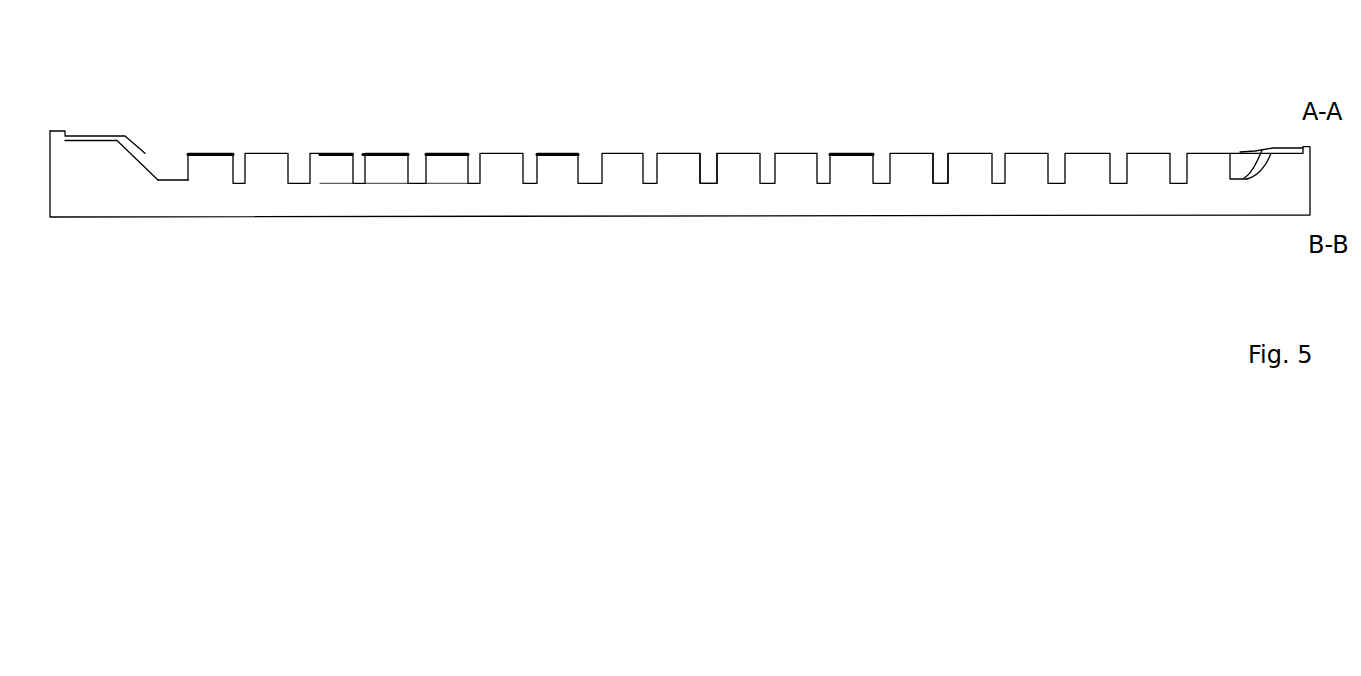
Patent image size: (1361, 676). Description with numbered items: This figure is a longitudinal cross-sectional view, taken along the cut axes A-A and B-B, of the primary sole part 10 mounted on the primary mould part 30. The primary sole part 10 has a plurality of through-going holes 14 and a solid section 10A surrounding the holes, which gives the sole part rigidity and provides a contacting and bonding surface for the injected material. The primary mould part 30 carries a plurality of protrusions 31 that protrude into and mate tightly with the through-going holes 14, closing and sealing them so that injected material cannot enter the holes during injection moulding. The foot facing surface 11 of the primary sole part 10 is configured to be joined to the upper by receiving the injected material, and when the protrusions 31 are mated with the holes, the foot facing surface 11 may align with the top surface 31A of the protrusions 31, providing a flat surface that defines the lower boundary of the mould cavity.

The primary sole part 10 is at (163, 157).
The solid section 10A is at (708, 163).
The foot facing surface 11 is at (878, 157).
The through-going holes 14 is at (441, 145).
The primary mould part 30 is at (116, 195).
The protrusions 31 is at (452, 188).
The top surface 31A is at (918, 154).